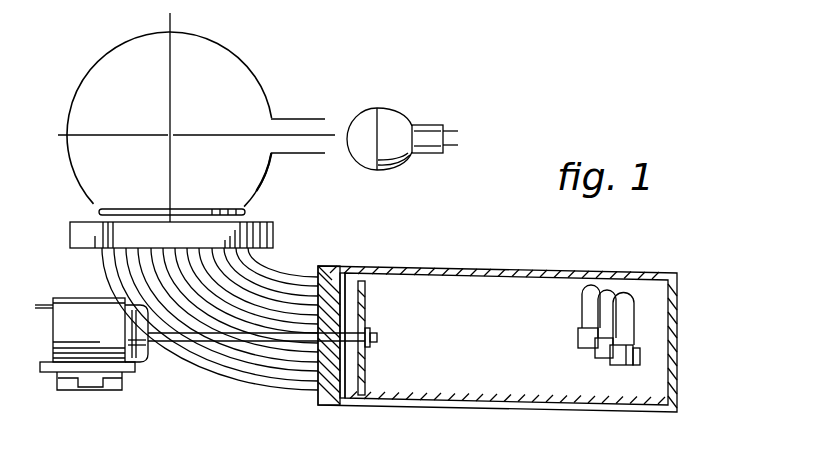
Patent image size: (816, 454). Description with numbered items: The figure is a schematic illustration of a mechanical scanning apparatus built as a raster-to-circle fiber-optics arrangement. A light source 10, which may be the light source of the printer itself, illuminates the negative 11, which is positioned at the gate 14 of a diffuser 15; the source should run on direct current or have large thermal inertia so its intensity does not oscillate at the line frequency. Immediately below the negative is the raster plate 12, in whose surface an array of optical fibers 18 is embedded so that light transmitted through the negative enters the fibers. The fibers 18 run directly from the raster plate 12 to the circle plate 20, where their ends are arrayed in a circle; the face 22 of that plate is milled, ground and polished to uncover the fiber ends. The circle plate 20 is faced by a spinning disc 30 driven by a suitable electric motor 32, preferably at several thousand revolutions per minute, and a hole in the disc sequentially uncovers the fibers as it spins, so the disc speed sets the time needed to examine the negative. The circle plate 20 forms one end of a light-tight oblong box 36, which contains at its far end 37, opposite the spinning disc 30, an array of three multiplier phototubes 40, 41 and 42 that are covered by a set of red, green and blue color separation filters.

The light source 10 is at (405, 112).
The negative 11 is at (247, 213).
The raster plate 12 is at (273, 243).
The gate 14 is at (247, 206).
The diffuser 15 is at (263, 85).
The optical fibers 18 is at (258, 378).
The circle plate 20 is at (330, 393).
The face 22 is at (345, 385).
The spinning disc 30 is at (367, 380).
The electric motor 32 is at (143, 363).
The oblong box 36 is at (565, 273).
The far end 37 is at (657, 320).
The multiplier phototube 40 is at (600, 283).
The multiplier phototube 41 is at (614, 293).
The multiplier phototube 42 is at (634, 300).